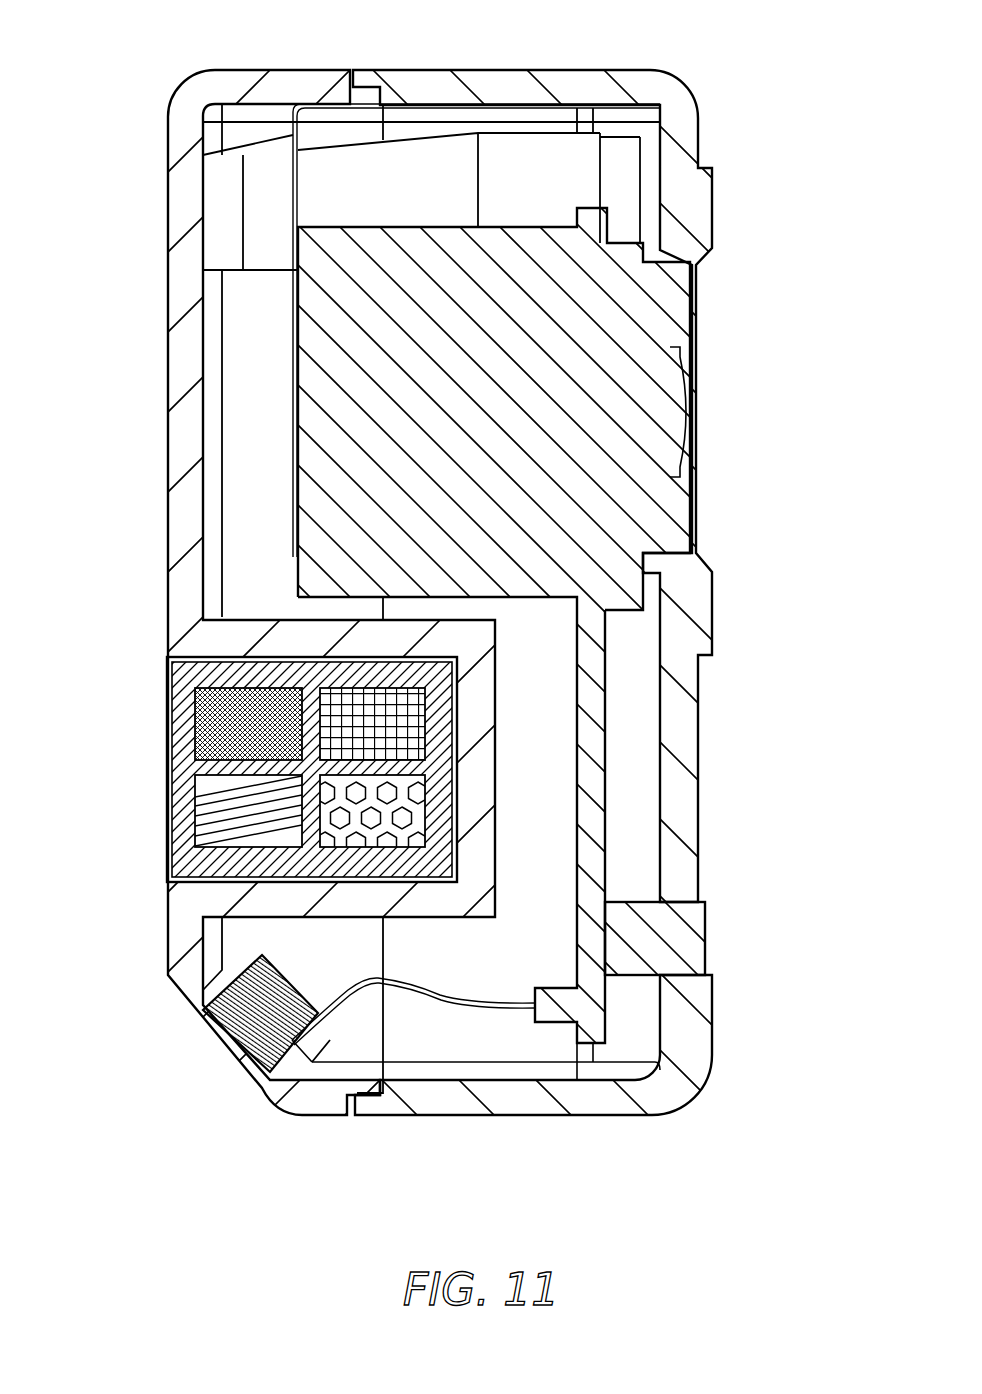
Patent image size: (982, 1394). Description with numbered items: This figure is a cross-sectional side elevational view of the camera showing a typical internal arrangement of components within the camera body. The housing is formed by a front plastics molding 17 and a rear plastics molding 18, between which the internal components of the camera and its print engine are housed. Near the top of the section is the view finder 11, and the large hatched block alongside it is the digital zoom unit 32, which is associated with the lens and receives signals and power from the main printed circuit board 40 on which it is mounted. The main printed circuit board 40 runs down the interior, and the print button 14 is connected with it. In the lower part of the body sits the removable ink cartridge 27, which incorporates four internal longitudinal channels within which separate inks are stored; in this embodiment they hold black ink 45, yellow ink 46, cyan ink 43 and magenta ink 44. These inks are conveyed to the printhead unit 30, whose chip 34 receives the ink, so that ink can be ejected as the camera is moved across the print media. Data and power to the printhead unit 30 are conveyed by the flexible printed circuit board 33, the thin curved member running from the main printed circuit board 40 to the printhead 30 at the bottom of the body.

The view finder 11 is at (260, 190).
The print button 14 is at (688, 925).
The front plastics molding 17 is at (675, 100).
The rear plastics molding 18 is at (300, 78).
The ink cartridge 27 is at (172, 664).
The printhead 30 is at (207, 997).
The digital zoom unit 32 is at (665, 410).
The flexible printed circuit board 33 is at (292, 215).
The chip 34 is at (212, 1042).
The main printed circuit board 40 is at (594, 700).
The cyan ink 43 is at (320, 732).
The magenta ink 44 is at (430, 830).
The black ink 45 is at (197, 715).
The yellow ink 46 is at (197, 815).